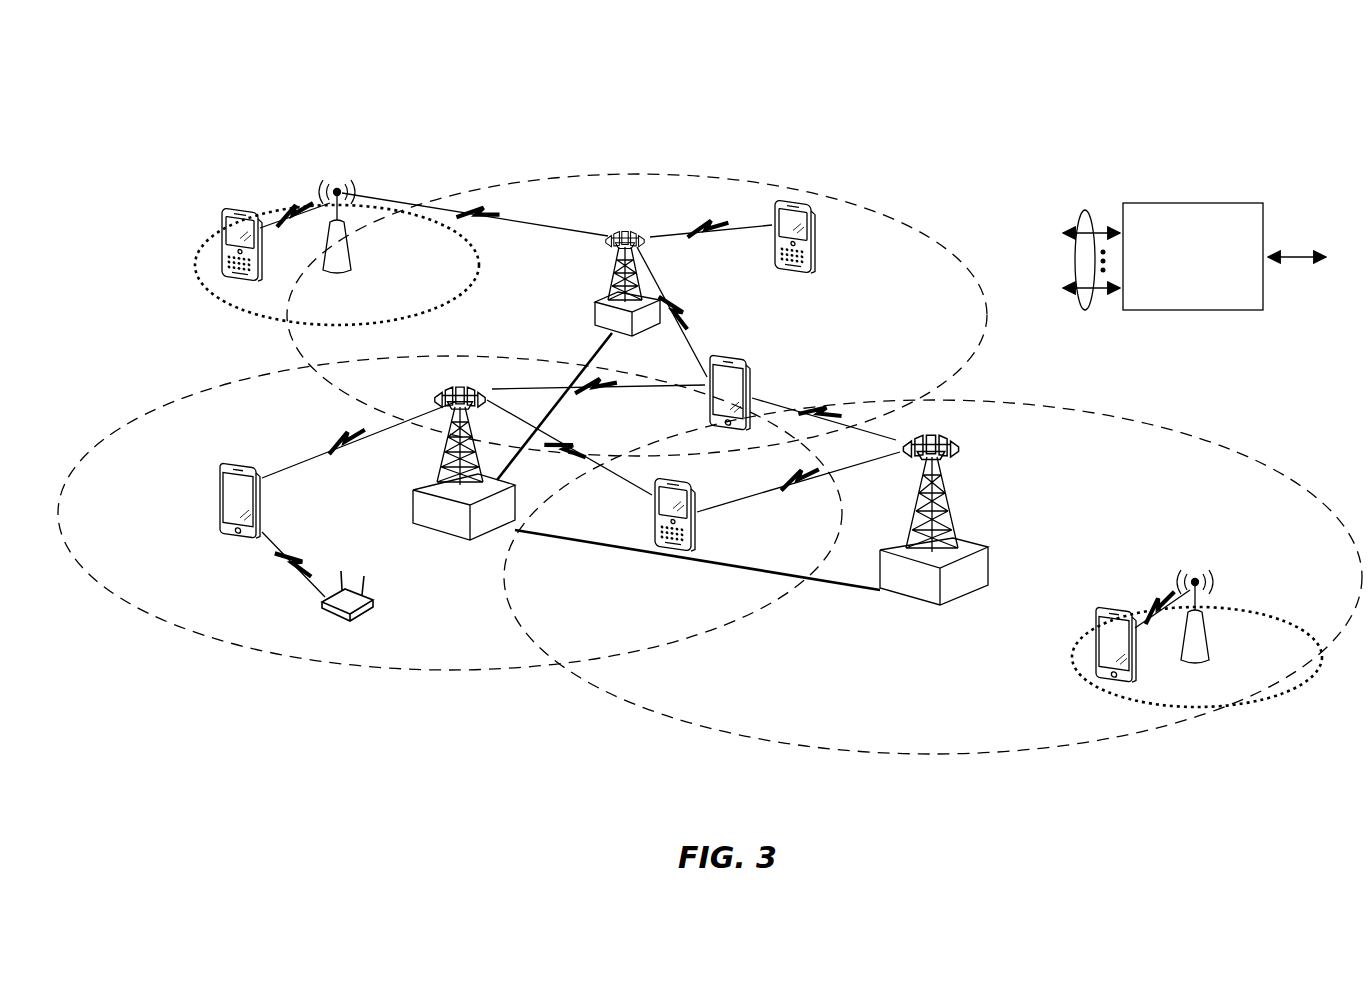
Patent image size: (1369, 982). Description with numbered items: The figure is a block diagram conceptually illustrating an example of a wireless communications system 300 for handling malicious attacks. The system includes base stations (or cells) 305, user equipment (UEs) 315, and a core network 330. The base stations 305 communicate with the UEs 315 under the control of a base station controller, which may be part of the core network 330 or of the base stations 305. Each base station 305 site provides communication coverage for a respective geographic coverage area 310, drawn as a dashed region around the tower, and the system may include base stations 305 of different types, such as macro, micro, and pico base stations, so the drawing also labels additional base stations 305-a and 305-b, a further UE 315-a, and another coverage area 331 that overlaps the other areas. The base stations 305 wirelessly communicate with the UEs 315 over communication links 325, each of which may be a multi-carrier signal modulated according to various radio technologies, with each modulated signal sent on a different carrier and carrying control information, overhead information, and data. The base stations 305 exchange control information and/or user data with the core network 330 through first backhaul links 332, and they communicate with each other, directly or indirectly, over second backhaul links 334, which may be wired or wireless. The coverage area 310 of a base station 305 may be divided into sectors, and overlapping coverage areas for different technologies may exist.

The wireless communications system 300 is at (1266, 96).
The base station 305 is at (348, 268).
The base station 305-a is at (434, 537).
The base station (access point) 305-b is at (338, 619).
The geographic coverage area 310 is at (738, 179).
The user equipment 315 is at (222, 217).
The user equipment (UE) 315-a is at (218, 487).
The communication link 325 is at (290, 207).
The core network 330 is at (1183, 204).
The coverage area 331 is at (1180, 434).
The first backhaul links 332 is at (1090, 212).
The second backhaul links 334 is at (596, 359).